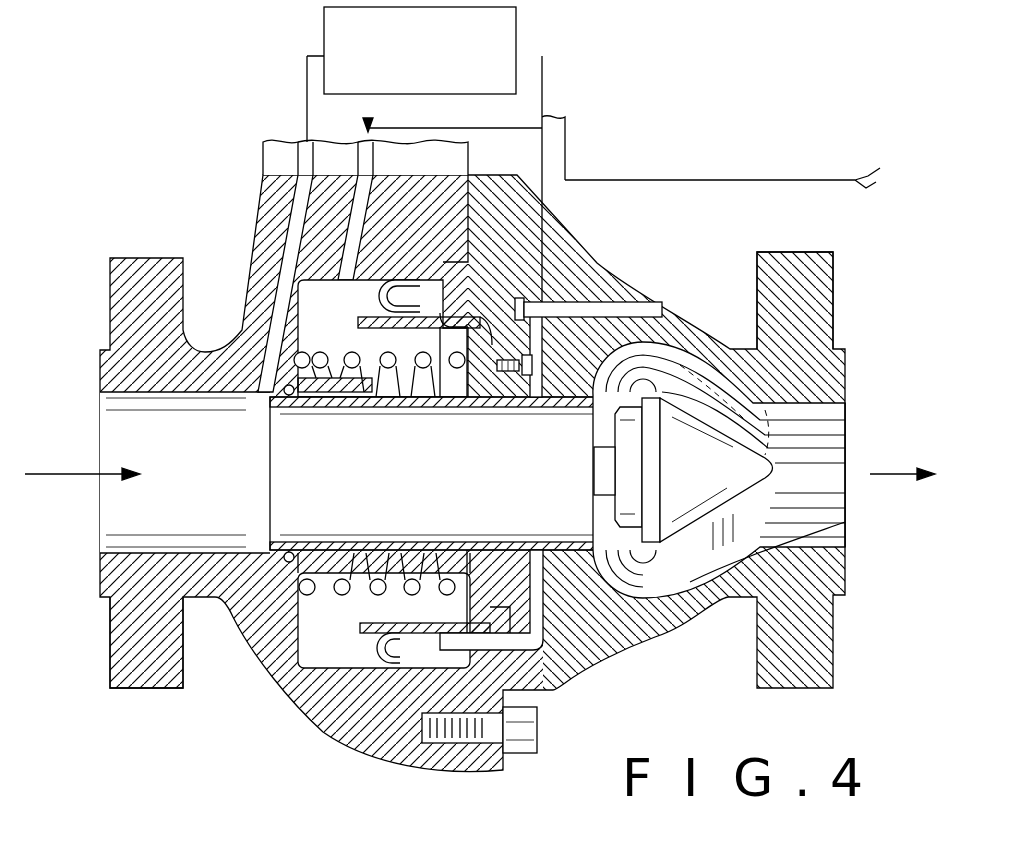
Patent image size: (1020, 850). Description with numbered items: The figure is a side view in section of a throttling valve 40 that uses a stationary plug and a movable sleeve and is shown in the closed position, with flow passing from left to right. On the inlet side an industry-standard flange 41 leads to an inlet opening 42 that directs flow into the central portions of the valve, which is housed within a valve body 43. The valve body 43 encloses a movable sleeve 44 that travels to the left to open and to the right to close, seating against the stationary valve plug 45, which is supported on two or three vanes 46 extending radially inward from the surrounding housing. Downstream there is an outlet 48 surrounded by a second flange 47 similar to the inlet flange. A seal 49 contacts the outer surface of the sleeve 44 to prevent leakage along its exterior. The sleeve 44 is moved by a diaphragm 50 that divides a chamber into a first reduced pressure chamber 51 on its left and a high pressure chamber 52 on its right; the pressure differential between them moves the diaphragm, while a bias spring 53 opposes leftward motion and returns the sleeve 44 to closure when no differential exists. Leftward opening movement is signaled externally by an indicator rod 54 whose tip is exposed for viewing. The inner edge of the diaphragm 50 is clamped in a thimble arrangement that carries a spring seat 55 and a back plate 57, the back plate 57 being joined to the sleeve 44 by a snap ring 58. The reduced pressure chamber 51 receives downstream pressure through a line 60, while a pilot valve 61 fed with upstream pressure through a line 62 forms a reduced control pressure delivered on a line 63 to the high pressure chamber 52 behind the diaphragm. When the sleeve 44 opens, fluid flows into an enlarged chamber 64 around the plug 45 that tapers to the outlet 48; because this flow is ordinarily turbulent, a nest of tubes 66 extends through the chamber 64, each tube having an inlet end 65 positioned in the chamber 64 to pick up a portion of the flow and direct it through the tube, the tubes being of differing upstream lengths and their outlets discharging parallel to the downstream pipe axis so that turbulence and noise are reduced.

The throttling valve 40 is at (480, 411).
The flange 41 is at (143, 690).
The inlet opening 42 is at (120, 548).
The valve body 43 is at (363, 710).
The movable sleeve 44 is at (267, 468).
The stationary valve plug 45 is at (710, 483).
The vanes 46 is at (752, 540).
The flange 47 is at (808, 285).
The outlet 48 is at (833, 368).
The seal 49 is at (293, 552).
The diaphragm 50 is at (393, 338).
The first reduced pressure chamber 51 is at (317, 653).
The high pressure chamber 52 is at (574, 681).
The bias spring 53 is at (340, 590).
The indicator rod 54 is at (642, 312).
The spring seat 55 is at (404, 652).
The back plate 57 is at (620, 643).
The snap ring 58 is at (528, 552).
The line 60 is at (690, 181).
The pilot valve 61 is at (518, 14).
The line 62 is at (305, 110).
The line 63 is at (566, 125).
The enlarged chamber 64 is at (534, 334).
The inlet end 65 is at (588, 404).
The nest of tubes 66 is at (864, 455).